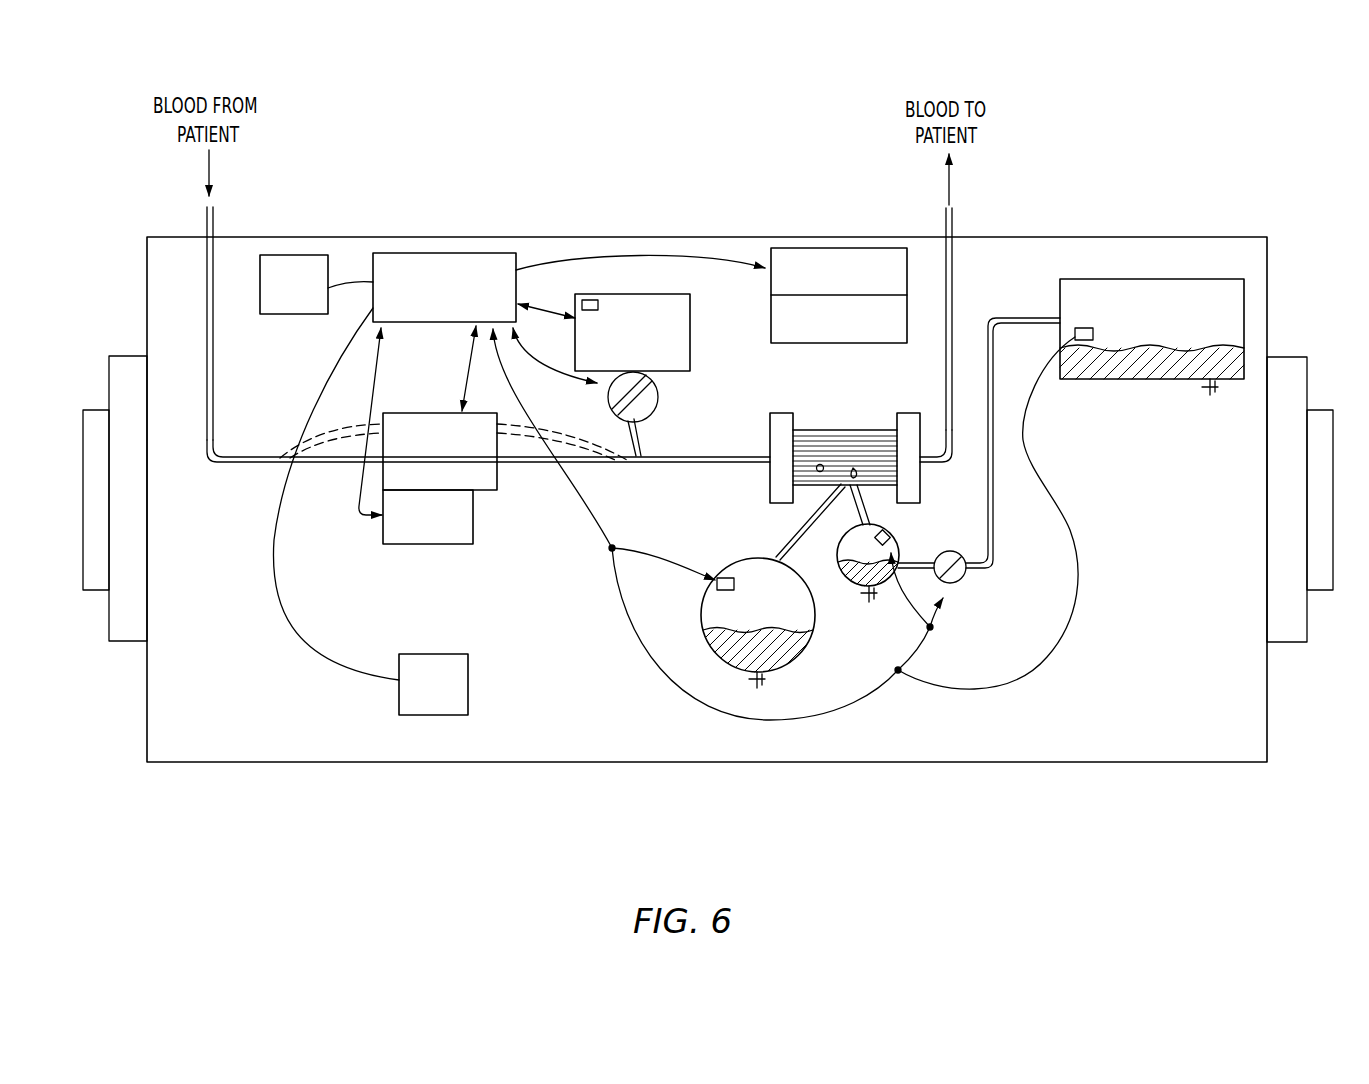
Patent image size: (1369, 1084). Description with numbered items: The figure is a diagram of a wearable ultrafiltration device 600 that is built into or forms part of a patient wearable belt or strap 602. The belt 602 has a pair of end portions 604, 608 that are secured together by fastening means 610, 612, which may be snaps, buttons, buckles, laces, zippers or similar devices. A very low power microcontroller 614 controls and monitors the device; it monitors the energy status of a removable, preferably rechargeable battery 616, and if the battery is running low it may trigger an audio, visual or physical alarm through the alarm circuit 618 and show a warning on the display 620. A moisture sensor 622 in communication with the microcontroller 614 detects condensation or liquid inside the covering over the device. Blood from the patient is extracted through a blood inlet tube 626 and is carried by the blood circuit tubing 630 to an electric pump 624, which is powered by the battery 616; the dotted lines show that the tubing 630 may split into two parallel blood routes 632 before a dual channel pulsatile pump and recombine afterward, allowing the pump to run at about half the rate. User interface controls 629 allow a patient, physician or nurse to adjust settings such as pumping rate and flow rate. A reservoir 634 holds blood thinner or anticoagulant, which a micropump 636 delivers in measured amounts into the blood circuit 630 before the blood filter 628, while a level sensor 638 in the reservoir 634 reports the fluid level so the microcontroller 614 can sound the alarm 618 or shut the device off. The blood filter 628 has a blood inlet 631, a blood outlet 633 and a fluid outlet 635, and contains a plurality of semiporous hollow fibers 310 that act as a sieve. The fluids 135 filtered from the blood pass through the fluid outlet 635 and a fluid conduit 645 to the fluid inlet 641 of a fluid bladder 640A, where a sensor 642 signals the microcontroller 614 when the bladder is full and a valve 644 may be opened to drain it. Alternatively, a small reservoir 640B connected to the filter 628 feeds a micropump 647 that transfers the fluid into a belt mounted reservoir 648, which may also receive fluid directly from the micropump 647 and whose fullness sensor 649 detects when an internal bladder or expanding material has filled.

The wearable ultrafiltration device 600 is at (1145, 188).
The belt or strap 602 is at (175, 693).
The end portion 604 is at (130, 630).
The end portion 608 is at (1282, 630).
The fastening means 610 is at (97, 420).
The fastening means 612 is at (1320, 440).
The microcontroller 614 is at (410, 268).
The battery 616 is at (455, 533).
The alarm circuit 618 is at (300, 272).
The display 620 is at (790, 268).
The moisture sensor 622 is at (468, 704).
The pump 624 is at (478, 468).
The blood inlet tube 626 is at (208, 222).
The blood filter 628 is at (908, 420).
The user interface controls 629 is at (893, 314).
The blood circuit tubing 630 is at (212, 327).
The blood inlet 631 is at (773, 418).
The parallel blood routes 632 is at (347, 421).
The blood outlet 633 is at (933, 430).
The reservoir 634 is at (663, 308).
The fluid outlet 635 is at (830, 493).
The micropump 636 is at (655, 398).
The level sensor 638 is at (590, 300).
The fluid bladder 640A is at (800, 610).
The small reservoir 640B is at (880, 530).
The fluid inlet 641 is at (778, 558).
The sensor 642 is at (725, 576).
The valve 644 is at (765, 680).
The fluid conduit 645 is at (803, 542).
The micropump 647 is at (962, 578).
The belt reservoir 648 is at (1230, 318).
The fullness sensor 649 is at (1085, 345).
The hollow fibers 310 is at (883, 455).
The fluids 135 is at (820, 464).